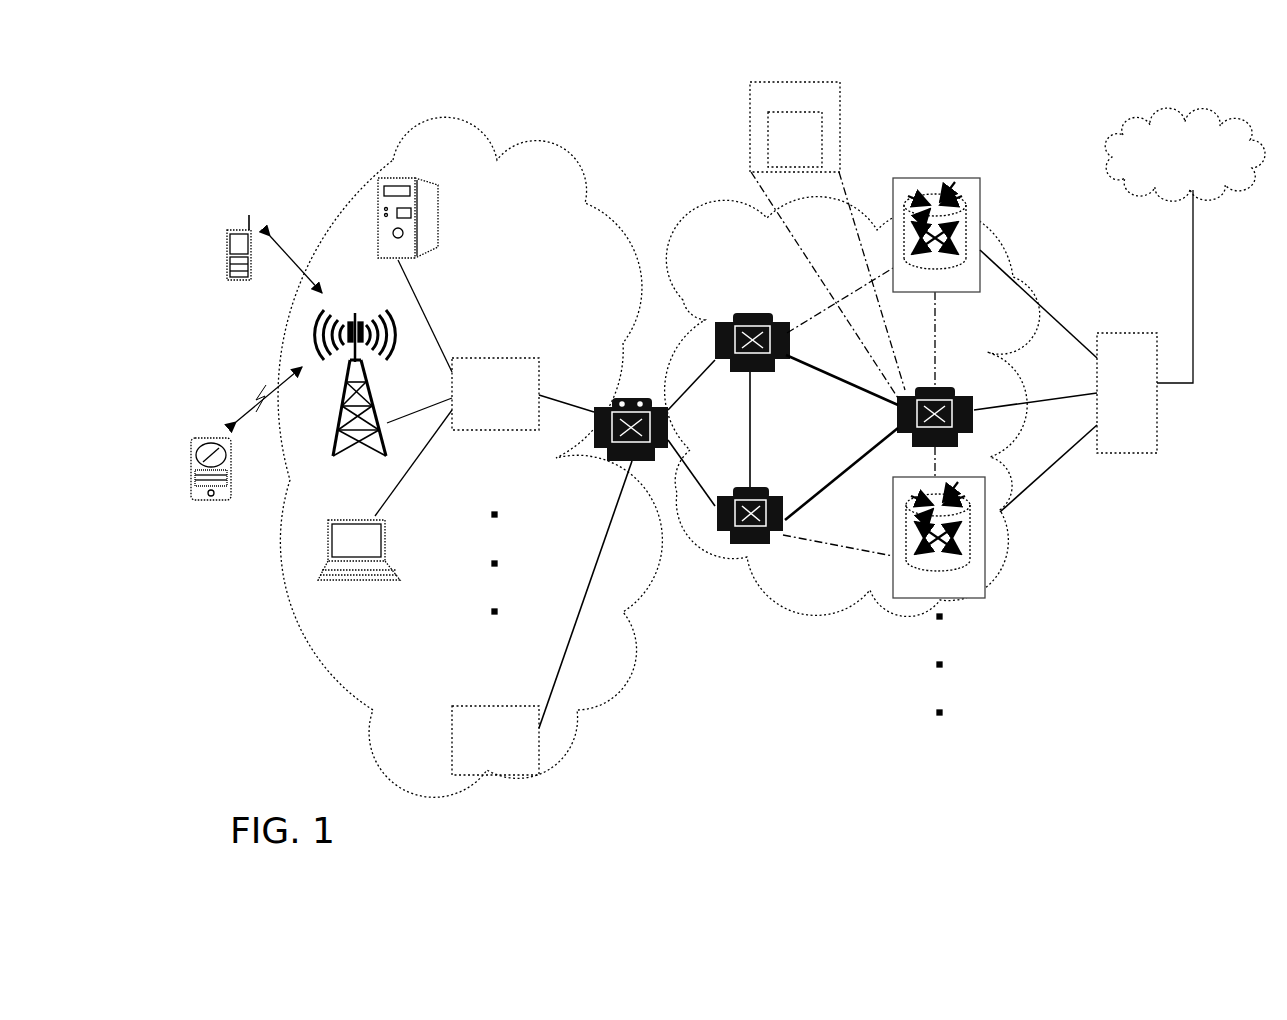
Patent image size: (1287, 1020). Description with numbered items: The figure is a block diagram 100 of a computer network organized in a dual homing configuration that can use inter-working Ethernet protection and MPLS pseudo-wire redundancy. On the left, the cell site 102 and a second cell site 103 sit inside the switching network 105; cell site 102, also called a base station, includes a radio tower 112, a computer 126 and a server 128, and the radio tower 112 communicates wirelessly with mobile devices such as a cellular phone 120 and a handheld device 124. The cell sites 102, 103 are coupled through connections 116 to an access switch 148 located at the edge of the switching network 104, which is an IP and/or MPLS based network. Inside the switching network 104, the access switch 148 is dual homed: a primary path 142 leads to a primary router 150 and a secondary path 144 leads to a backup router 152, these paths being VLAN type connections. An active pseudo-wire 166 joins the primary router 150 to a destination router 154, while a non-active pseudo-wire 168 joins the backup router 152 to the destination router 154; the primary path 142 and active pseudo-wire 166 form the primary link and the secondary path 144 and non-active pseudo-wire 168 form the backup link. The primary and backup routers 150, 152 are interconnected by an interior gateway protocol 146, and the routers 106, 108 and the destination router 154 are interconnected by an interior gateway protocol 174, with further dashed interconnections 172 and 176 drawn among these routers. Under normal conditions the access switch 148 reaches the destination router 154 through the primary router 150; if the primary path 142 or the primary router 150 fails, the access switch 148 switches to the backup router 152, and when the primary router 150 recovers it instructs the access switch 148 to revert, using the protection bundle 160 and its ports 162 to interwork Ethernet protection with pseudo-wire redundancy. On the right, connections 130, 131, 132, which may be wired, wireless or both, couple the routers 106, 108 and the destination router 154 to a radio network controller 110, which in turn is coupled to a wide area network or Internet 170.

The block diagram 100 is at (305, 104).
The cell site 102 is at (522, 357).
The cell site 103 is at (498, 705).
The switching network 104 is at (742, 232).
The switching network 105 is at (600, 210).
The router 106 is at (936, 235).
The router 108 is at (939, 537).
The Radio Network Controller 110 is at (1127, 393).
The radio tower 112 is at (367, 462).
The connections 116 is at (598, 545).
The cellular phone 120 is at (241, 228).
The handheld device 124 is at (232, 493).
The computer 126 is at (359, 550).
The server 128 is at (440, 237).
The connection 130 is at (1050, 310).
The connection 131 is at (1078, 393).
The connection 132 is at (1050, 465).
The primary path 142 is at (707, 370).
The secondary path 144 is at (700, 492).
The Interior Gateway Protocol 146 is at (757, 440).
The access switch 148 is at (598, 400).
The primary router 150 is at (796, 314).
The backup router 152 is at (800, 482).
The destination router 154 is at (958, 395).
The G.8031 bundle 160 is at (827, 240).
The G.8031 ports 162 is at (795, 139).
The active PWE 166 is at (836, 356).
The non-active PWE 168 is at (828, 476).
The Wide Area Network and/or Internet 170 is at (852, 292).
The link 172 is at (858, 535).
The Interior Gateway Protocol 174 is at (950, 333).
The link 176 is at (937, 468).